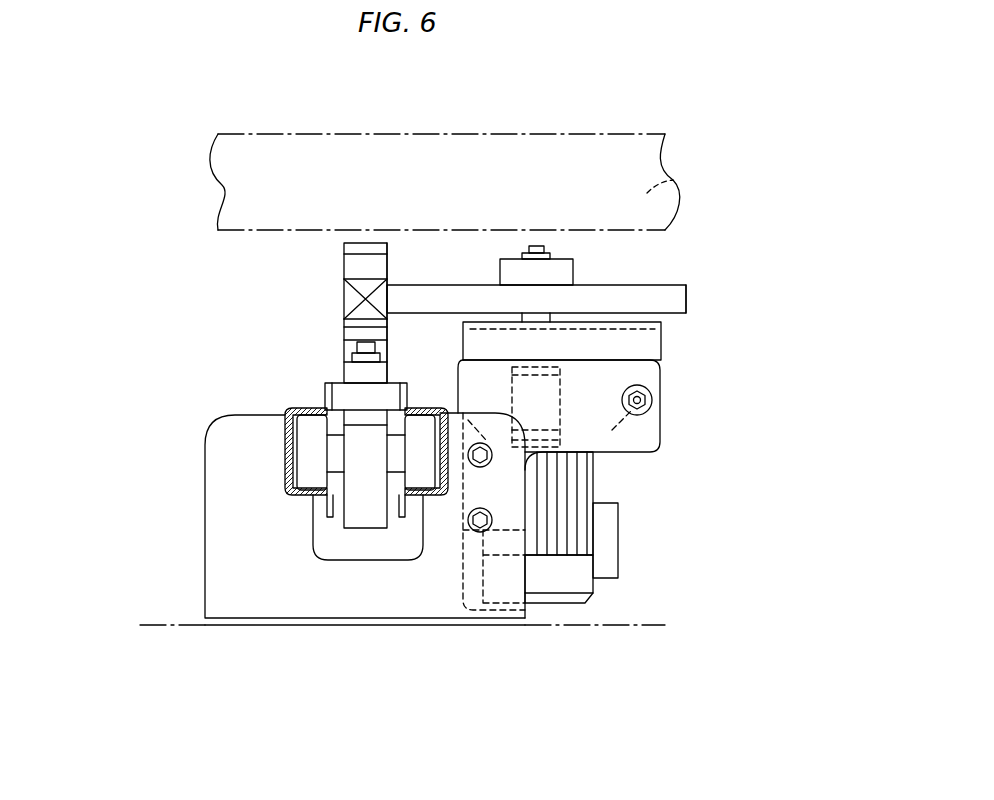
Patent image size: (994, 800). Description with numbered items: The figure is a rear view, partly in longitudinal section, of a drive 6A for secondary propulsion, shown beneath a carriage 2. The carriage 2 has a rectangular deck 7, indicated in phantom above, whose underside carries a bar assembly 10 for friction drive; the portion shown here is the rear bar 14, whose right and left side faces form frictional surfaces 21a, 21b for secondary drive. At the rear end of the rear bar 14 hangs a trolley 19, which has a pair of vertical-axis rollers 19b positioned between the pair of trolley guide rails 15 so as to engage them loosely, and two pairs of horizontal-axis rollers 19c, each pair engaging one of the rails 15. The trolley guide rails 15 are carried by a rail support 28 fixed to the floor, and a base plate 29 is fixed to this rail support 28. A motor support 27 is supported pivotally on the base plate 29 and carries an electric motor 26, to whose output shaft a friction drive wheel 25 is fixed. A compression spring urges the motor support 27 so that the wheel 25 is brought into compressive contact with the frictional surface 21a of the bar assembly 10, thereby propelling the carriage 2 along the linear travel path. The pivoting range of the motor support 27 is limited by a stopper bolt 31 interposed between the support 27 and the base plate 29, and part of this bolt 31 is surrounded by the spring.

The carriage 2 is at (222, 190).
The deck 7 is at (673, 180).
The bar assembly 10 is at (344, 305).
The rear bar 14 is at (353, 312).
The frictional surface 21a is at (387, 300).
The frictional surface 21b is at (345, 288).
The friction drive wheel 25 is at (640, 295).
The drive for secondary propulsion 6A is at (690, 293).
The motor support 27 is at (635, 342).
The stopper bolt 31 is at (640, 400).
The base plate 29 is at (613, 430).
The electric motor 26 is at (577, 527).
The rail support 28 is at (215, 549).
The trolley guide rails 15 is at (285, 470).
The vertical-axis rollers 19b is at (330, 394).
The horizontal-axis rollers 19c is at (313, 475).
The trolley 19 is at (365, 515).